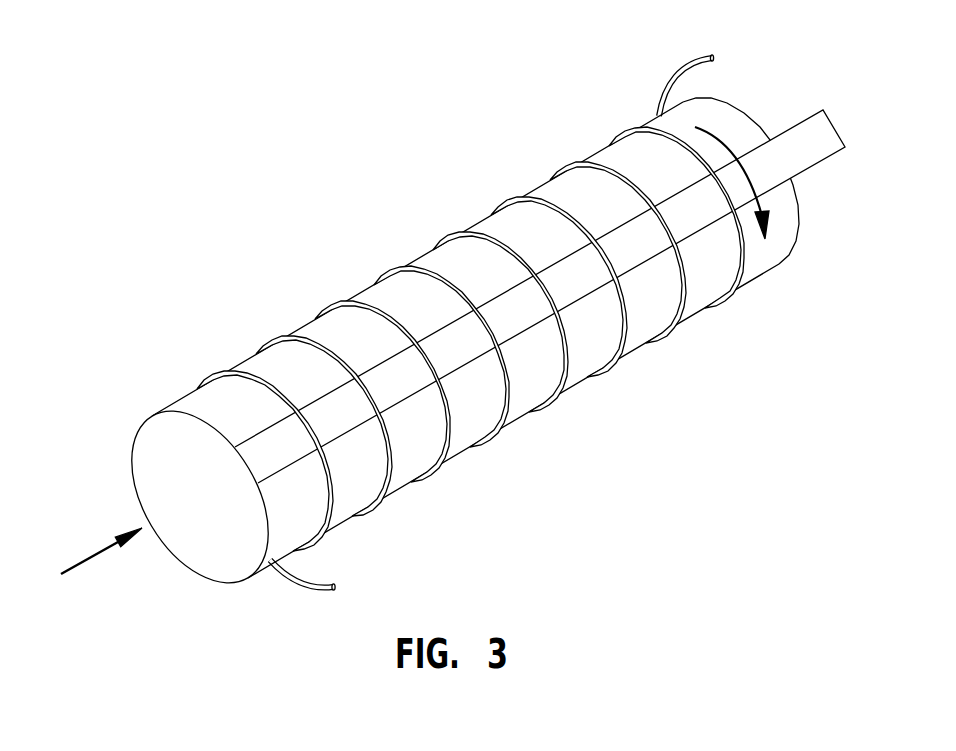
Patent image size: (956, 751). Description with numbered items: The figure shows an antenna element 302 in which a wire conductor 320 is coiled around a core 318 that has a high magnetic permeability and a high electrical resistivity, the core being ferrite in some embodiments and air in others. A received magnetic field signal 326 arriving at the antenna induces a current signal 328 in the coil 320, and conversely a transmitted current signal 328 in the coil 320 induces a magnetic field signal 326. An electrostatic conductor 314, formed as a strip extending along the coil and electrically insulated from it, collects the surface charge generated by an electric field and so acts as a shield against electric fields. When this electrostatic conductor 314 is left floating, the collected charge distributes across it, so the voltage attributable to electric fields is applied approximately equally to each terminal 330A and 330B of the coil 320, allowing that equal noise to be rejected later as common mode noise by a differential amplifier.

The antenna element 302 is at (309, 155).
The electrostatic conductor 314 is at (817, 148).
The core 318 is at (190, 557).
The wire conductor 320 is at (388, 267).
The magnetic field signal 326 is at (97, 547).
The current signal 328 is at (750, 172).
The terminal 330A is at (322, 595).
The terminal 330B is at (692, 53).